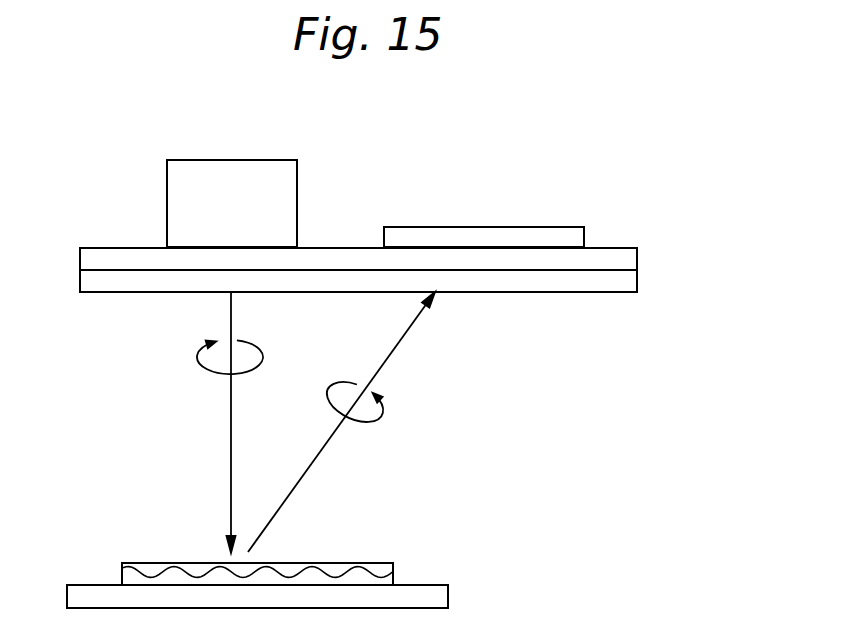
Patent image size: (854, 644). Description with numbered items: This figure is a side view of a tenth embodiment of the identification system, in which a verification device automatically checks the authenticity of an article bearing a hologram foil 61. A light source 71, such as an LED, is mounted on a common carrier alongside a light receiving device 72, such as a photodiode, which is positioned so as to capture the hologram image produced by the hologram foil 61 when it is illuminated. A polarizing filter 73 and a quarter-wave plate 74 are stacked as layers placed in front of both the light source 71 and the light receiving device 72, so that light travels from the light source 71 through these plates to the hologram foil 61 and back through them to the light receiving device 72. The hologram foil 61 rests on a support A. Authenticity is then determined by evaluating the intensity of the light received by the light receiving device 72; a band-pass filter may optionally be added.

The light source 71 is at (261, 168).
The light receiving device 72 is at (517, 232).
The polarizing filter 73 is at (630, 263).
The quarter-wave plate 74 is at (628, 283).
The hologram foil 61 is at (385, 550).
The stage / base A is at (442, 597).